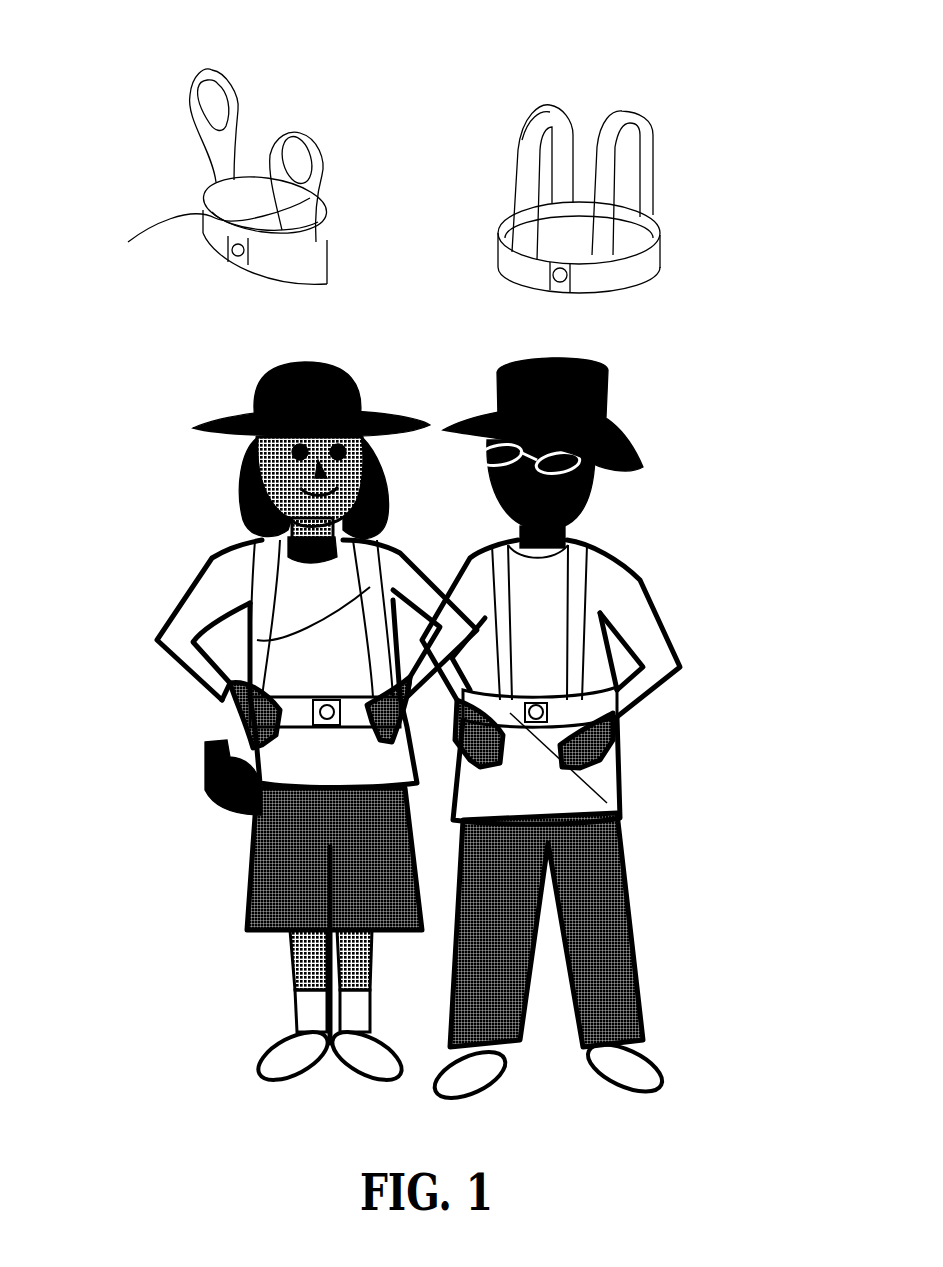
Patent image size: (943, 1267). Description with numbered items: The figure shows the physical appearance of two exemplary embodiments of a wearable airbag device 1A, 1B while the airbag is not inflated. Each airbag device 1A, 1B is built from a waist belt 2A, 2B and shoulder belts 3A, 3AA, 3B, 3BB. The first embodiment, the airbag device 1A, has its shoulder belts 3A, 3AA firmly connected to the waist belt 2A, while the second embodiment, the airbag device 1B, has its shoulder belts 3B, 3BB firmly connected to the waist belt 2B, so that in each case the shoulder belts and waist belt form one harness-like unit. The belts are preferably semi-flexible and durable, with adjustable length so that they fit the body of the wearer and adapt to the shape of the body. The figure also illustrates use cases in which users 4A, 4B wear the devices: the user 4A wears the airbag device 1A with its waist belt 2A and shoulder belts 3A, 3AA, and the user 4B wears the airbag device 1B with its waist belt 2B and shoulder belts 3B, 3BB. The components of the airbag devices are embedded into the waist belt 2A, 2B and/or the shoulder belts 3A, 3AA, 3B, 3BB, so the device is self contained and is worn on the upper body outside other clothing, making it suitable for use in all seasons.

The airbag device 1A is at (133, 60).
The airbag device 1B is at (707, 68).
The waist belt 2A is at (305, 718).
The waist belt 2B is at (620, 803).
The shoulder belt 3A is at (262, 598).
The shoulder belt 3AA is at (262, 640).
The shoulder belt 3B is at (503, 588).
The shoulder belt 3BB is at (573, 640).
The user 4A is at (220, 572).
The user 4B is at (648, 595).